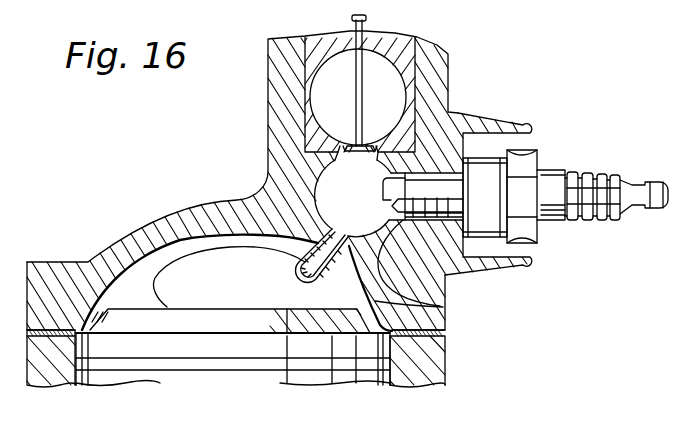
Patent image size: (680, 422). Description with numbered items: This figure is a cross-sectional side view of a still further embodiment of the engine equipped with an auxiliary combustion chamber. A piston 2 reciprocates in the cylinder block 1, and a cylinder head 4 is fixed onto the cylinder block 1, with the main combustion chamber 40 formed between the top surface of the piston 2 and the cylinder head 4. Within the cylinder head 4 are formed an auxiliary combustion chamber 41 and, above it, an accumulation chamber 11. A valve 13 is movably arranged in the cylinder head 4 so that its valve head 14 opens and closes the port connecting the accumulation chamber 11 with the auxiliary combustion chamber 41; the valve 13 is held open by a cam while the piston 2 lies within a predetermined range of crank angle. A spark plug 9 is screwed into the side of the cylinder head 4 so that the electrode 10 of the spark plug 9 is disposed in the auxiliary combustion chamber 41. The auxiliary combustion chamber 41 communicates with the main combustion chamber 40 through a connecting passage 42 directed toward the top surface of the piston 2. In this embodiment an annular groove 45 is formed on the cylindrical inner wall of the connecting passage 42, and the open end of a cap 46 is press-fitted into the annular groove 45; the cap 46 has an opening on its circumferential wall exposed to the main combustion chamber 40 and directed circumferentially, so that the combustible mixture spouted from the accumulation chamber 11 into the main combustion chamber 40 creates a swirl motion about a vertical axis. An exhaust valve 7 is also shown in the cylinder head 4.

The cylinder block 1 is at (427, 362).
The piston 2 is at (343, 352).
The cylinder head 4 is at (187, 222).
The exhaust valve 7 is at (133, 258).
The spark plug 9 is at (555, 178).
The electrode of the spark plug 10 is at (507, 258).
The accumulation chamber 11 is at (384, 90).
The valve 13 is at (366, 72).
The valve head 14 is at (320, 172).
The main combustion chamber 40 is at (147, 303).
The auxiliary combustion chamber 41 is at (360, 216).
The connecting passage 42 is at (427, 300).
The annular groove 45 is at (317, 233).
The cap 46 is at (305, 281).